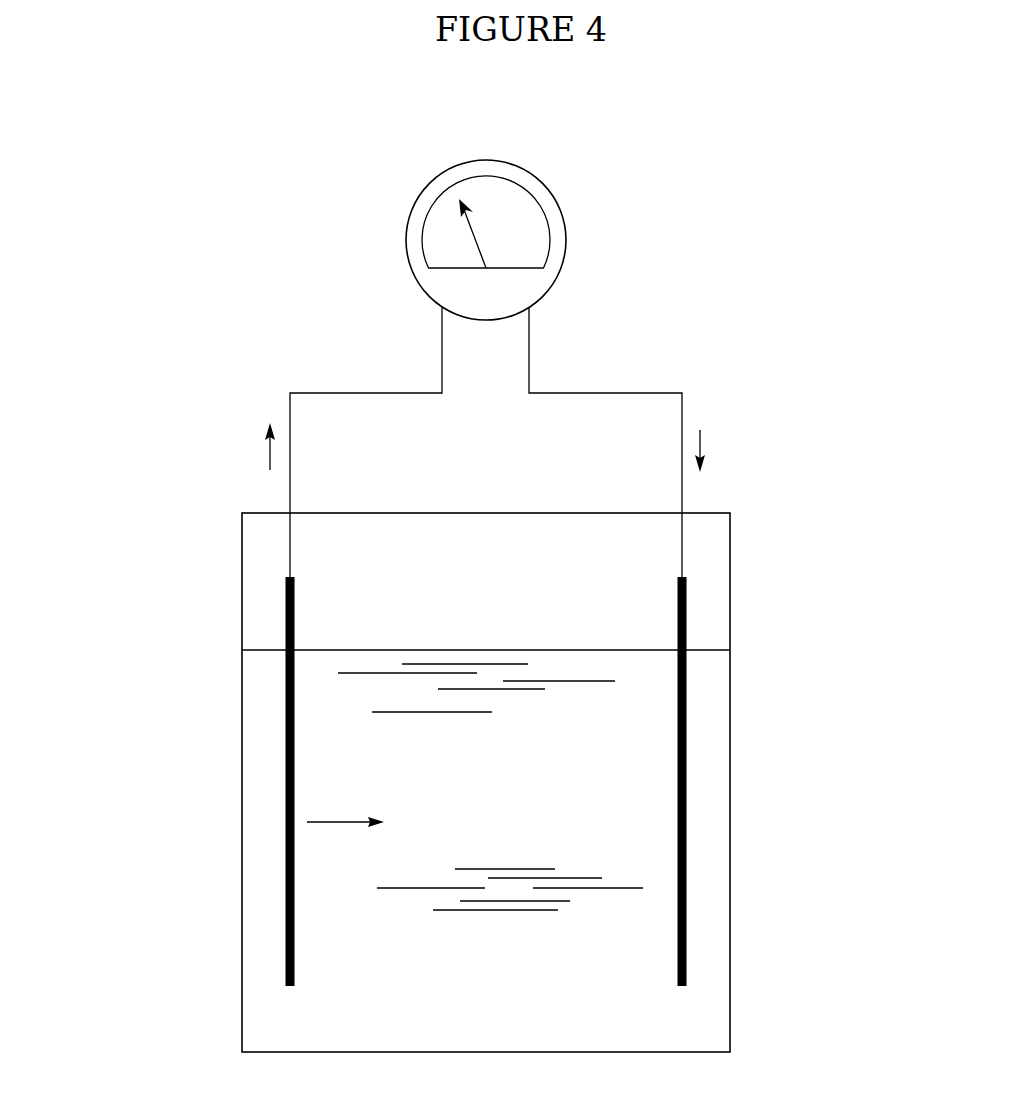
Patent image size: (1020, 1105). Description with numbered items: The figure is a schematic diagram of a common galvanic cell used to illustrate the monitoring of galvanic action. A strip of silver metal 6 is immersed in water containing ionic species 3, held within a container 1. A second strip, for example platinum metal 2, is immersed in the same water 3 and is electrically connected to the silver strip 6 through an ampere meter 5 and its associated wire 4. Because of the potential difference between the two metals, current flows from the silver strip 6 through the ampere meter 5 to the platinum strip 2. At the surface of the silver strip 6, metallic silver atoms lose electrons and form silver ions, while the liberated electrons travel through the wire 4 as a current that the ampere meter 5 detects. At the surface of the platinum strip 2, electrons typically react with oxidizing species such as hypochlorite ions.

The container 1 is at (243, 788).
The cathode electrode 2 is at (686, 787).
The water containing ionic species 3 is at (525, 937).
The wire 4 is at (532, 370).
The ampere meter 5 is at (402, 248).
The silver metal strip 6 is at (285, 867).